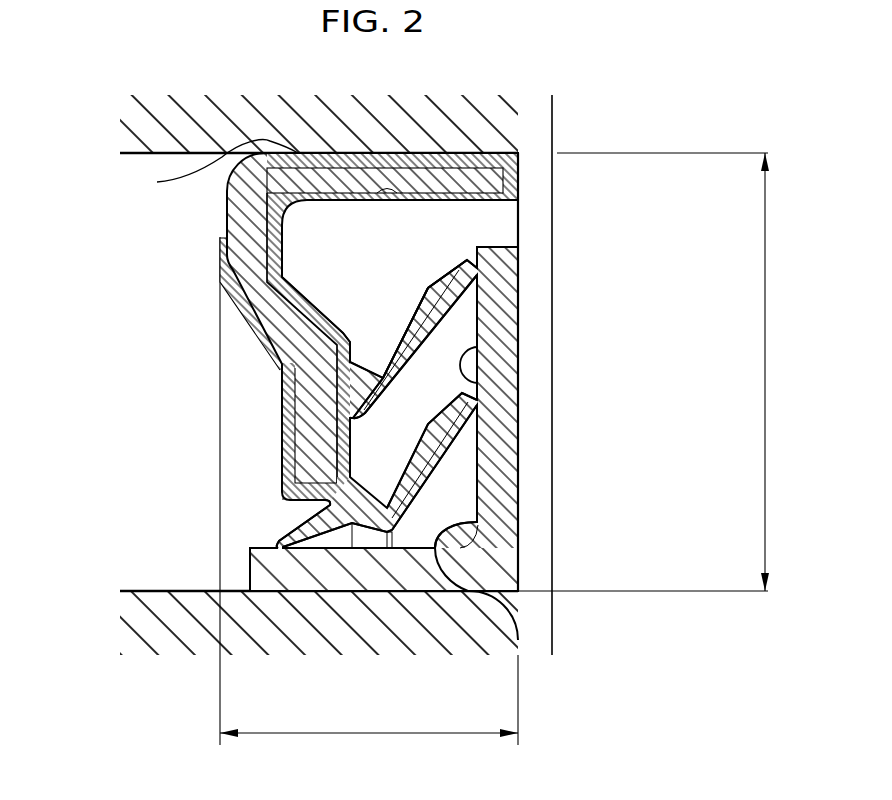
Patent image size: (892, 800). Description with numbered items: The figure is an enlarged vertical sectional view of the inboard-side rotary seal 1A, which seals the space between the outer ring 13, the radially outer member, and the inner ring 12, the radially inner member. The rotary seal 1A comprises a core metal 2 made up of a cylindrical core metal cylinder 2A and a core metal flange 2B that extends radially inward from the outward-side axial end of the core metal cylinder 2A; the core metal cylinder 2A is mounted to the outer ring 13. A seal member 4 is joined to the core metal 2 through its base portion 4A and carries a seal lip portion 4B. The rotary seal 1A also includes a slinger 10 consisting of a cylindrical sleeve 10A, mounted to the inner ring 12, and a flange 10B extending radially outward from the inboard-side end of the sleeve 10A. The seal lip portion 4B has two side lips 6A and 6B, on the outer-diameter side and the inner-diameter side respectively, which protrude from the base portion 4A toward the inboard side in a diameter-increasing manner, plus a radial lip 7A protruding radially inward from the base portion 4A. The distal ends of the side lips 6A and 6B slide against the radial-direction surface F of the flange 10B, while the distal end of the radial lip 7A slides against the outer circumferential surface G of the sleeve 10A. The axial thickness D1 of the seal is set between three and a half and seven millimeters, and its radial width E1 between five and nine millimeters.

The outer ring 13 is at (520, 122).
The inner ring 12 is at (153, 598).
The rotary seal 1A is at (412, 416).
The core metal 2 is at (192, 256).
The core metal cylinder 2A is at (208, 170).
The core metal flange 2B is at (228, 252).
The seal member 4 is at (374, 310).
The base portion 4A is at (330, 316).
The seal lip portion 4B is at (410, 321).
The side lip 6A is at (443, 328).
The side lip 6B is at (462, 424).
The radial lip 7A is at (304, 548).
The slinger 10 is at (586, 396).
The sleeve 10A is at (478, 523).
The flange 10B is at (518, 443).
The radial-direction surface F is at (478, 384).
The outer circumferential surface G is at (282, 546).
The width of the seal E1 is at (643, 372).
The thickness of the seal D1 is at (369, 700).